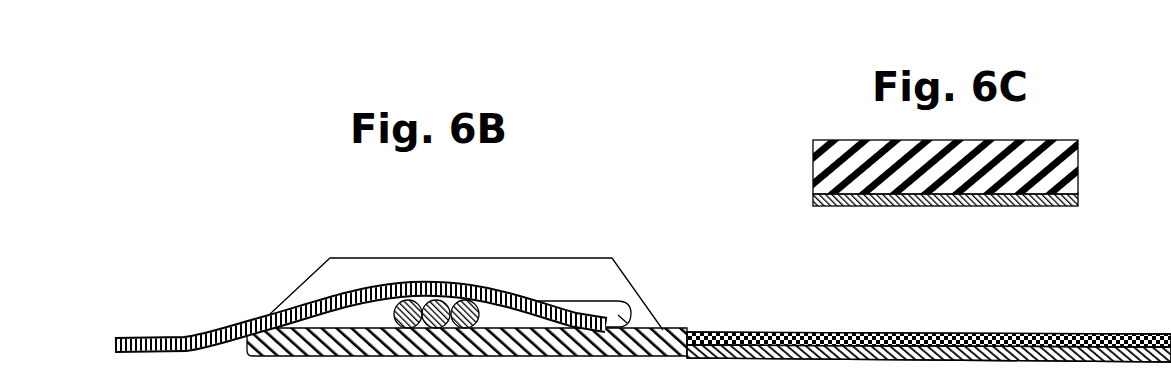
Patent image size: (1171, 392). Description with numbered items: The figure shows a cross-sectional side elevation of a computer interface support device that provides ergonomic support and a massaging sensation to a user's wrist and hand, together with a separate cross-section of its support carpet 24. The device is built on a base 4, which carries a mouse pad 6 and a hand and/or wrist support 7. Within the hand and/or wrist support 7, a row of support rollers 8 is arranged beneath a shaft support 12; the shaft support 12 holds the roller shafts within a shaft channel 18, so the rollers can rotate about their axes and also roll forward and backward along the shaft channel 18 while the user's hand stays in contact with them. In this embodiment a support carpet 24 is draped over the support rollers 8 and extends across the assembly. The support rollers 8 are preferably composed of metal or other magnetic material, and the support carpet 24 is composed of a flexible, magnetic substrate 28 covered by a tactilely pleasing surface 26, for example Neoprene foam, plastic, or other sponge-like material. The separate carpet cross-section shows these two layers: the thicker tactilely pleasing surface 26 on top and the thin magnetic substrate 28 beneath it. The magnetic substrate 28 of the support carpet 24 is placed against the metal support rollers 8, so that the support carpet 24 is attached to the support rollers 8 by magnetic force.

In FIG. 6B, the base 4 is at (807, 360).
In FIG. 6B, the mouse pad 6 is at (797, 333).
In FIG. 6B, the hand and/or wrist support 7 is at (389, 288).
In FIG. 6B, the support roller 8 is at (407, 356).
In FIG. 6B, the shaft support 12 is at (533, 266).
In FIG. 6B, the shaft channel 18 is at (627, 356).
In FIG. 6B, the support carpet 24 is at (218, 329).
In FIG. 6C, the support carpet 24 is at (941, 193).
In FIG. 6C, the tactilely pleasing surface 26 is at (1080, 173).
In FIG. 6C, the flexible magnetic substrate 28 is at (1033, 206).